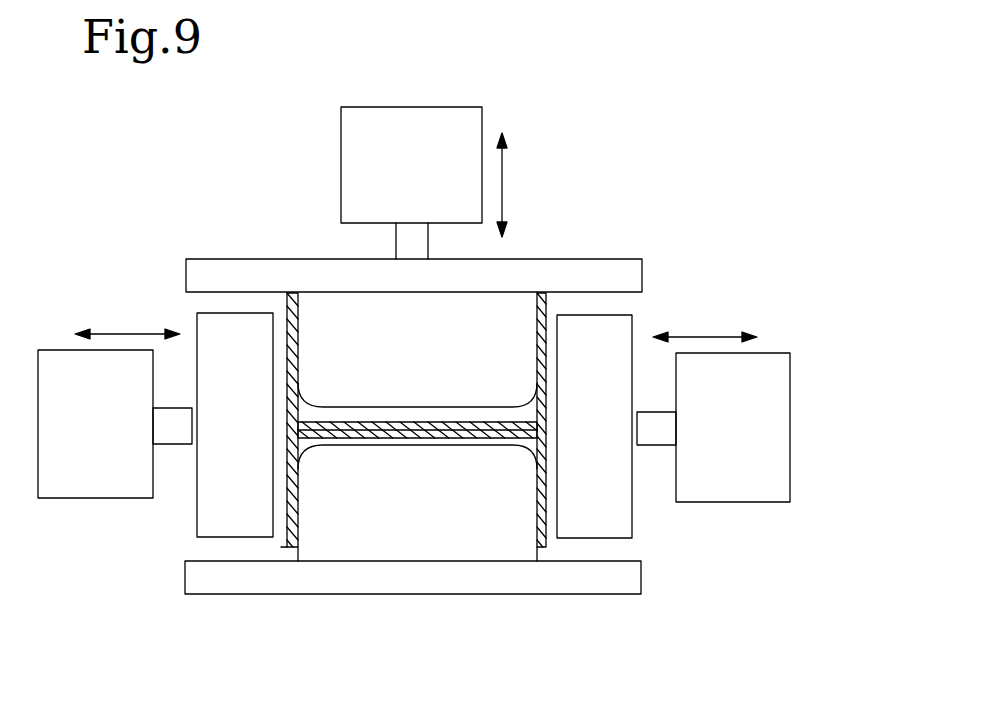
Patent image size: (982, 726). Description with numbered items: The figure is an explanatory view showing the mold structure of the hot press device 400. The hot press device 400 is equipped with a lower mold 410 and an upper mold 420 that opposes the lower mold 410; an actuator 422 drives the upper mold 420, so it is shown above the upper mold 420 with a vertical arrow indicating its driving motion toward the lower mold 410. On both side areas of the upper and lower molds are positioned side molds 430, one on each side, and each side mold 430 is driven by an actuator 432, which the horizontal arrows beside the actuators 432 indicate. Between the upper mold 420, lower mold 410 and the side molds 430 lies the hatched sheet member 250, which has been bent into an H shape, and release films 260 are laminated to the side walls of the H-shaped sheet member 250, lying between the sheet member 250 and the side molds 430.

The hot press device 400 is at (577, 115).
The lower mold 410 is at (467, 545).
The upper mold 420 is at (512, 308).
The actuator 422 is at (414, 128).
The side molds 430 is at (202, 513).
The actuators 432 is at (62, 480).
The sheet members 250 is at (352, 432).
The release films 260 is at (550, 348).